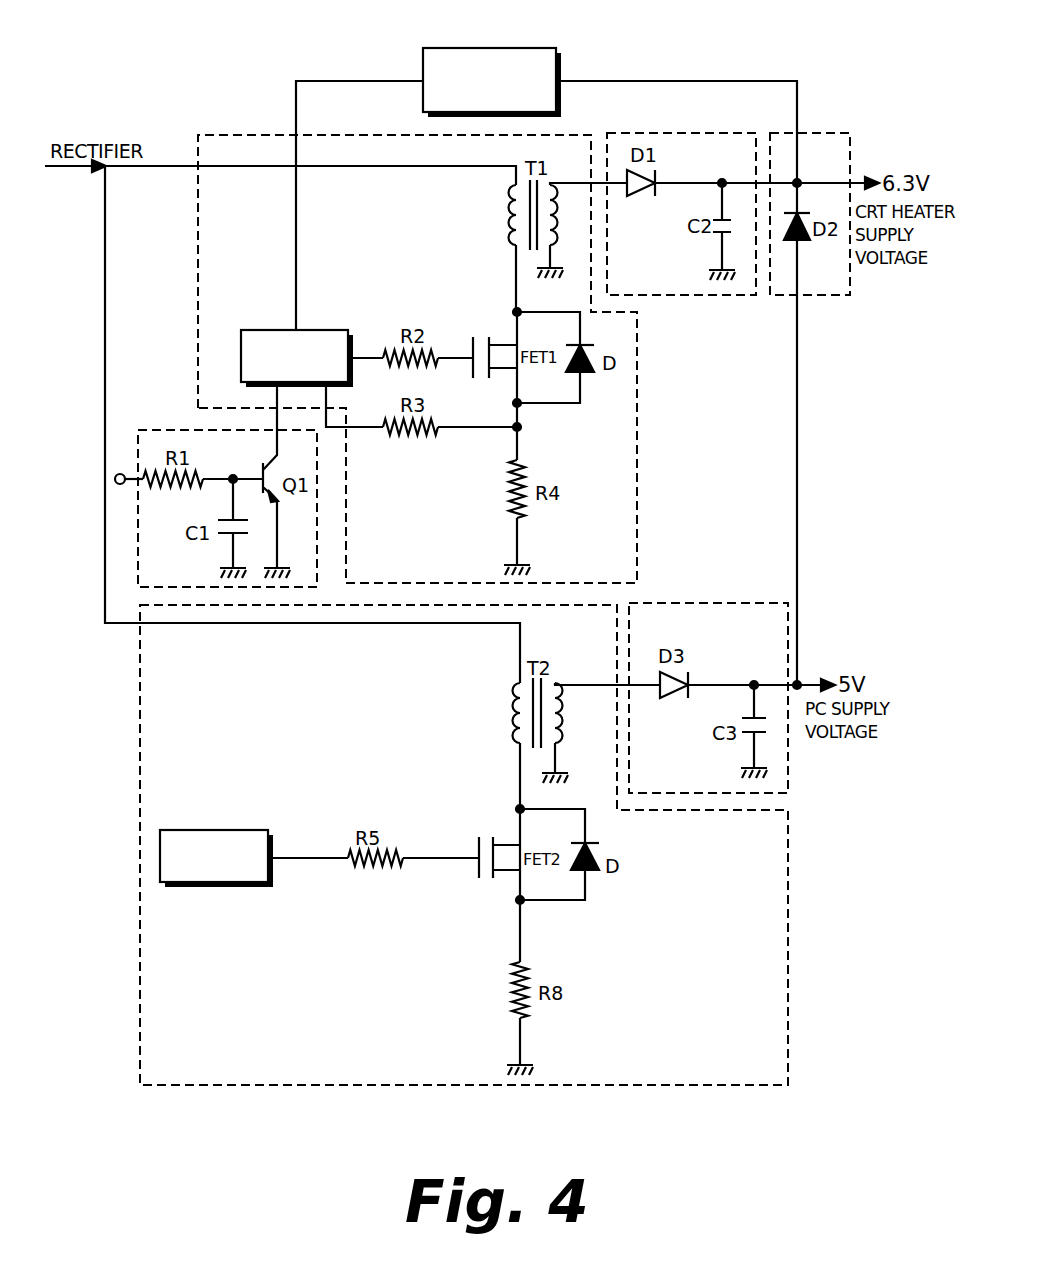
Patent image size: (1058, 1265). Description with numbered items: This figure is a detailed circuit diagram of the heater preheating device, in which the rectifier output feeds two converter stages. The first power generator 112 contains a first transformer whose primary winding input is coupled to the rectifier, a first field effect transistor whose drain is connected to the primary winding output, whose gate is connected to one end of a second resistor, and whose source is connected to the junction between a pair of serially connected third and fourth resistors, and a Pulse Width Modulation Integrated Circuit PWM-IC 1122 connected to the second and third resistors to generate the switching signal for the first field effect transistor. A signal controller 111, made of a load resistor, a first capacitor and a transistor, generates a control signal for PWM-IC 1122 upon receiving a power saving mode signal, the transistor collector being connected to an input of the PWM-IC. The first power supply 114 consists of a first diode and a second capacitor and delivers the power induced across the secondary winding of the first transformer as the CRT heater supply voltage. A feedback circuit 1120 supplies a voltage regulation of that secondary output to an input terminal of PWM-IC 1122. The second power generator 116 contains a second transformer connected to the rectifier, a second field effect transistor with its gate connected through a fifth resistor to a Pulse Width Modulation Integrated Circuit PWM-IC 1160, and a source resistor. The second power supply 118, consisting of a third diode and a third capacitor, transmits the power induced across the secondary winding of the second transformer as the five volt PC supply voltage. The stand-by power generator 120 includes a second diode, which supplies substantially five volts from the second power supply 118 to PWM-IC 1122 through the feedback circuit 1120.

The feedback circuit 1120 is at (505, 32).
The first power generator 112 is at (253, 116).
The Pulse Width Modulation Integrated Circuit PWM-IC 1122 is at (262, 330).
The signal controller 111 is at (172, 429).
The first power supply 114 is at (722, 115).
The stand-by power generator 120 is at (838, 115).
The second power supply 118 is at (745, 585).
The second power generator 116 is at (139, 737).
The Pulse Width Modulation Integrated Circuit PWM-IC 1160 is at (228, 814).